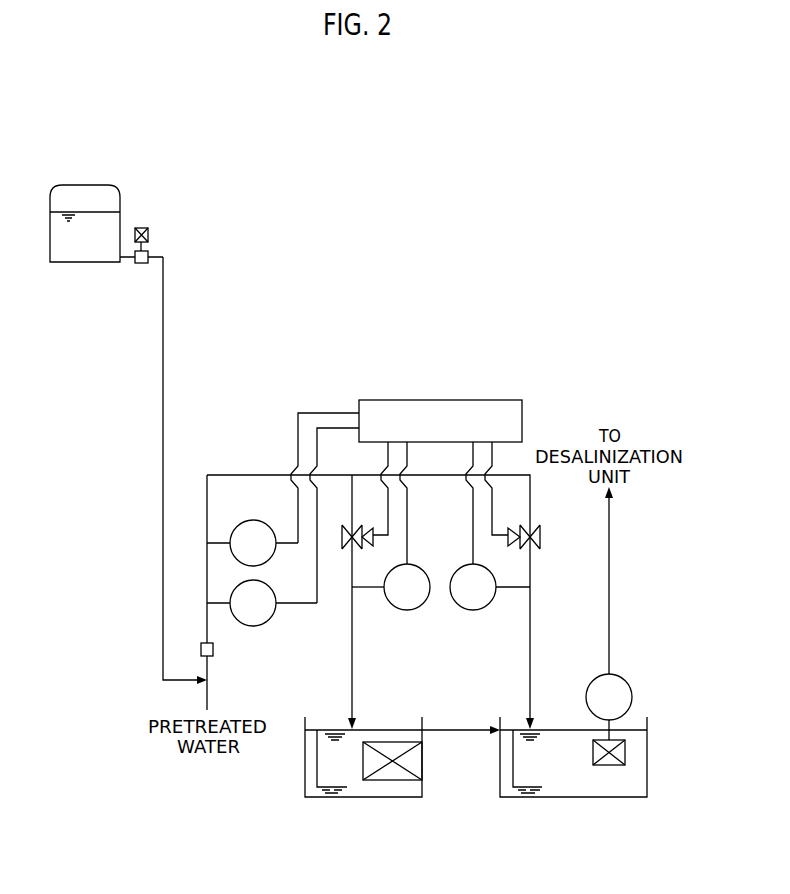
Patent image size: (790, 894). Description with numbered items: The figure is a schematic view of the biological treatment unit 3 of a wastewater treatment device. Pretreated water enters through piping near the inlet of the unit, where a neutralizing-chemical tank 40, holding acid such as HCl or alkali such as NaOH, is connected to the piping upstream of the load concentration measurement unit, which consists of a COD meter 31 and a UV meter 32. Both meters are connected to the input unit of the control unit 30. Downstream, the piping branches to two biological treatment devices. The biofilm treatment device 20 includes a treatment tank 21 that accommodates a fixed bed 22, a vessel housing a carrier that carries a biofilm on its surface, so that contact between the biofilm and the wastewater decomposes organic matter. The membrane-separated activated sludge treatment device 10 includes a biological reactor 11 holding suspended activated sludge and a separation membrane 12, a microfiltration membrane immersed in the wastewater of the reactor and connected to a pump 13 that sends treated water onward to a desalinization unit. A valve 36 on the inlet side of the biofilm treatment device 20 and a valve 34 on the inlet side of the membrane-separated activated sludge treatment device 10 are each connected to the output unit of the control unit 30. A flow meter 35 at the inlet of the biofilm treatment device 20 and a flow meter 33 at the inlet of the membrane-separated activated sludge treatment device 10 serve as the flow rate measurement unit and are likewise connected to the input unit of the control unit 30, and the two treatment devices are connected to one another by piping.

The biological treatment unit 3 is at (264, 366).
The neutralizing-chemical tank 40 is at (122, 221).
The control unit 30 is at (441, 400).
The UV meter 32 is at (240, 518).
The COD meter 31 is at (253, 628).
The valve 36 is at (355, 524).
The valve 34 is at (536, 524).
The flow meter 35 is at (416, 605).
The flow meter 33 is at (480, 612).
The biofilm treatment device 20 is at (402, 801).
The treatment tank 21 is at (333, 800).
The fixed bed 22 is at (423, 758).
The membrane-separated activated sludge treatment device 10 is at (590, 799).
The biological reactor 11 is at (612, 800).
The separation membrane 12 is at (626, 752).
The pump 13 is at (600, 676).